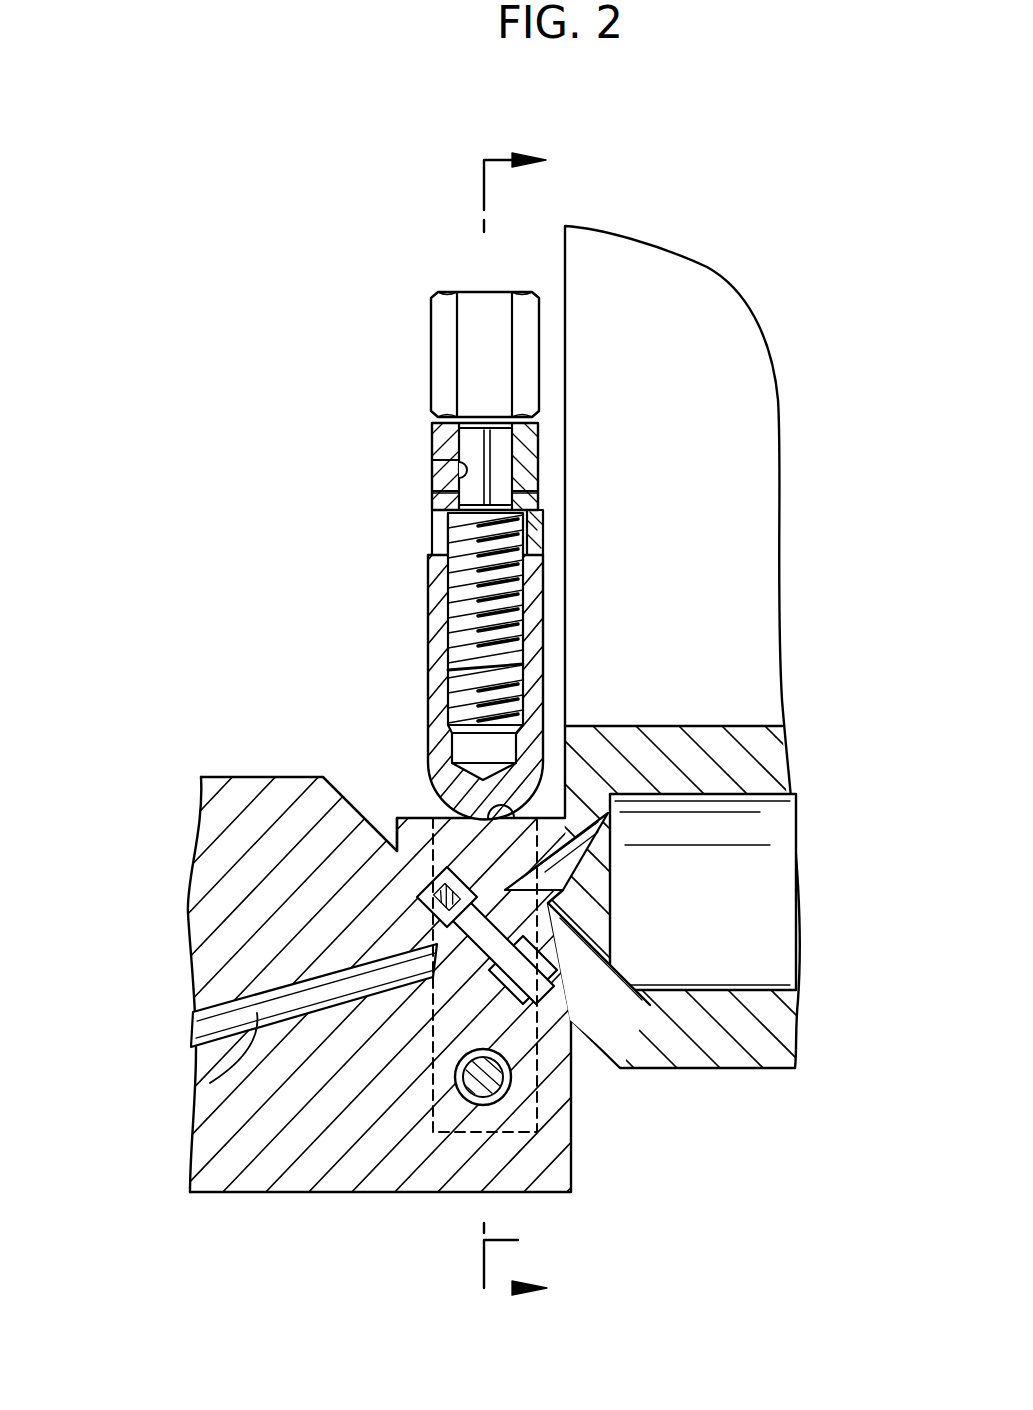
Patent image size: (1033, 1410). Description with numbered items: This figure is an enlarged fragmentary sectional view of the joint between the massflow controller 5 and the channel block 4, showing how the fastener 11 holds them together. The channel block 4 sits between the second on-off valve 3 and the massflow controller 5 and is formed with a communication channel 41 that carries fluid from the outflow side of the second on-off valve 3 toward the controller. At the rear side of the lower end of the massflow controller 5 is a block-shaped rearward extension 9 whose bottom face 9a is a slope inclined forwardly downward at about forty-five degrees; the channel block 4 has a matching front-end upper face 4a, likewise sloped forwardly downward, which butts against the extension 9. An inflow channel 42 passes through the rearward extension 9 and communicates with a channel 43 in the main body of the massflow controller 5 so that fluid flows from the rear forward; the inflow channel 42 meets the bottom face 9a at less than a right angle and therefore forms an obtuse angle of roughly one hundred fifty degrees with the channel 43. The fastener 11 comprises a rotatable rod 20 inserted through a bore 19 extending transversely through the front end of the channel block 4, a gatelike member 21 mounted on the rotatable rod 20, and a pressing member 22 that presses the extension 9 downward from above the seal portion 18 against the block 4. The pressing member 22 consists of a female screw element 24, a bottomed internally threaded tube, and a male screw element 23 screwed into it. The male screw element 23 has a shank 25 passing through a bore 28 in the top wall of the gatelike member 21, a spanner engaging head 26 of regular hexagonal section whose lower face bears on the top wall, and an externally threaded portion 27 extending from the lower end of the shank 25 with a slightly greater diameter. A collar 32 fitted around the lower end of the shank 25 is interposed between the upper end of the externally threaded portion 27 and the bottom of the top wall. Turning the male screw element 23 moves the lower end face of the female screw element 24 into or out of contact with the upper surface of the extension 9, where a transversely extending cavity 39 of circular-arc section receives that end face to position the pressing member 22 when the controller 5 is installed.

The second on-off valve 3 is at (510, 720).
The channel block 4 is at (312, 1165).
The front-end upper face 4a is at (397, 818).
The massflow controller 5 is at (755, 612).
The rearward extension 9 is at (417, 836).
The bottom face 9a is at (440, 883).
The fastener 11 is at (482, 636).
The seal portion 18 is at (503, 1000).
The bore 19 is at (467, 1100).
The rotatable rod 20 is at (485, 1167).
The gatelike member 21 is at (474, 457).
The pressing member 22 is at (545, 655).
The male screw element 23 is at (540, 530).
The female screw element 24 is at (527, 590).
The shank 25 is at (493, 453).
The spanner engaging head 26 is at (522, 350).
The externally threaded portion 27 is at (485, 619).
The bore 28 is at (455, 472).
The collar 32 is at (435, 503).
The cavity 39 is at (562, 855).
The communication channel 41 is at (262, 1015).
The inflow channel 42 is at (640, 1052).
The channel 43 is at (758, 910).